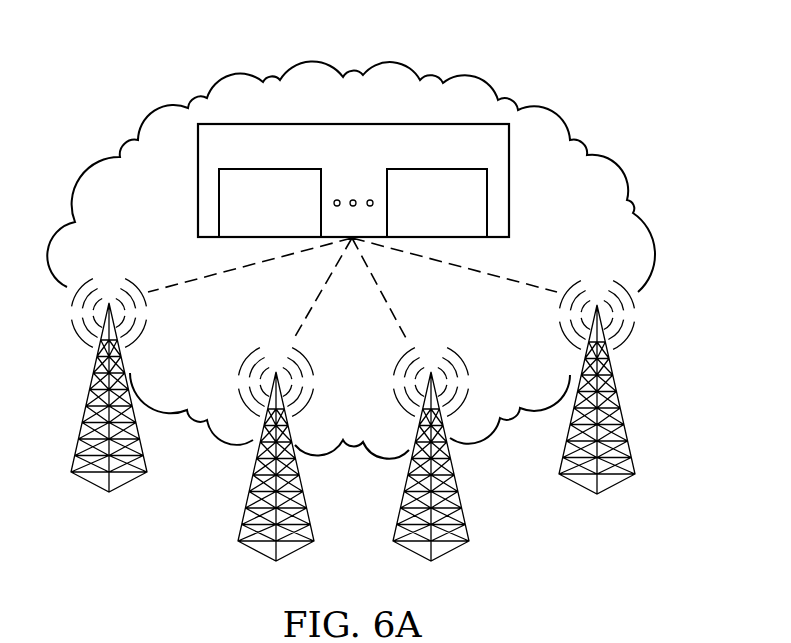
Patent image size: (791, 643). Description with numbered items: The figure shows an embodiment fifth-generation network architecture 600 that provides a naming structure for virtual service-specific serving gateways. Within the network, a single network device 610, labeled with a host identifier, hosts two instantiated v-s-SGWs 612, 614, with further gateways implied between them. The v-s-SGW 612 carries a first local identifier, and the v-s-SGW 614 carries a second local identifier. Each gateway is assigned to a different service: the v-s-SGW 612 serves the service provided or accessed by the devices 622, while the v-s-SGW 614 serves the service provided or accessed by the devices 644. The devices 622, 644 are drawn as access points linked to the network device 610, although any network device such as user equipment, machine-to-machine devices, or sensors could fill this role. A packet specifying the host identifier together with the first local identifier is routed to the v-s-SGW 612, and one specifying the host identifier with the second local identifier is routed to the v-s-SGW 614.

The 5G network architecture 600 is at (224, 65).
The network device 610 is at (514, 190).
The v-s-SGW 612 is at (221, 203).
The v-s-SGW 614 is at (477, 198).
The devices 622 is at (92, 486).
The devices 644 is at (259, 549).